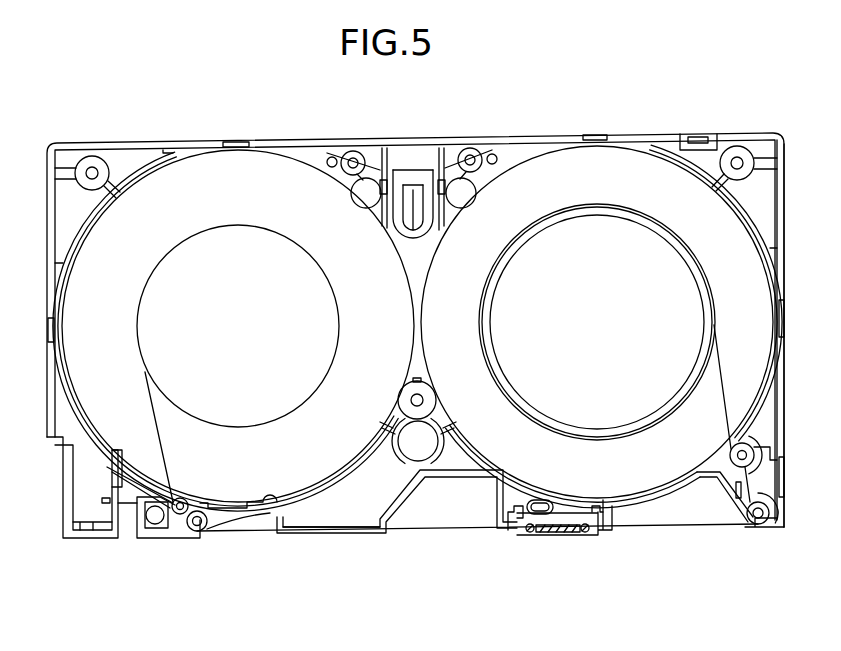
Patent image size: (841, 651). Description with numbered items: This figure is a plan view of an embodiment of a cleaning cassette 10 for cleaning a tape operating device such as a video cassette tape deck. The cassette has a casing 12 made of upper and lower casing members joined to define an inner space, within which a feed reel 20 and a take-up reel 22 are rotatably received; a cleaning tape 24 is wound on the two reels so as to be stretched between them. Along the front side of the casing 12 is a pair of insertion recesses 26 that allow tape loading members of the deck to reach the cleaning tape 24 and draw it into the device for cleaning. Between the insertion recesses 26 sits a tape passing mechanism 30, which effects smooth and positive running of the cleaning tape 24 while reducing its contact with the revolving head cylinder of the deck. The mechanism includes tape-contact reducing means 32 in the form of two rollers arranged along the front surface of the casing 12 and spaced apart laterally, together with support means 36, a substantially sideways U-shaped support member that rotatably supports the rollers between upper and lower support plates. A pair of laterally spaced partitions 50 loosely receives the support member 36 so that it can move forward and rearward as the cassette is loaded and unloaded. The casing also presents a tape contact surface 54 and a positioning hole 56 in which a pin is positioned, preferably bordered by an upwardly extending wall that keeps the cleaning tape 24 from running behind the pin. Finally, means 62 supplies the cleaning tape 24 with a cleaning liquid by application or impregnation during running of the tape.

The cleaning cassette 10 is at (435, 301).
The casing 12 is at (790, 248).
The feed reel 20 is at (637, 416).
The take-up reel 22 is at (275, 421).
The cleaning tape 24 is at (163, 430).
The insertion recesses 26 is at (413, 512).
The tape passing mechanism 30 is at (559, 540).
The tape-contact reducing means 32 is at (530, 535).
The support means 36 is at (516, 533).
The partitions 50 is at (612, 528).
The tape contact surface 54 is at (314, 537).
The positioning hole 56 is at (528, 500).
The means for supplying cleaning liquid 62 is at (748, 451).